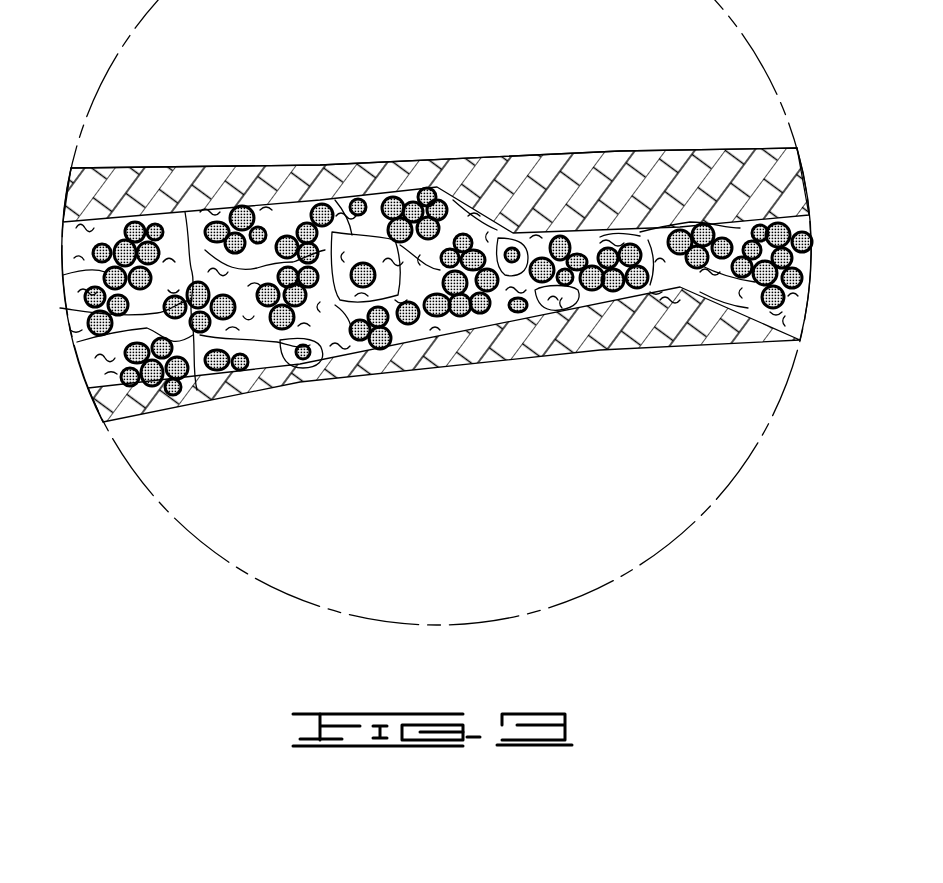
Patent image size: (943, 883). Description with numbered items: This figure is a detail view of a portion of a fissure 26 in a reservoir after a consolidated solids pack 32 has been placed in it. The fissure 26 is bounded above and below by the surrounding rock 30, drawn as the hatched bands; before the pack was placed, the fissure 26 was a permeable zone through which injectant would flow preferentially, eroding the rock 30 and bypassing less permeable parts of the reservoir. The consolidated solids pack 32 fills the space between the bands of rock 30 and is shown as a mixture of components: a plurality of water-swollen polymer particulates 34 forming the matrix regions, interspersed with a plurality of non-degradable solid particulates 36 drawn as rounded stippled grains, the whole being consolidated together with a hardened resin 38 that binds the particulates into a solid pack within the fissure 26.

The fissure 26 is at (688, 148).
The rock 30 is at (564, 153).
The consolidated solids pack 32 is at (285, 166).
The water-swollen polymer particulates 34 is at (371, 201).
The non-degradable solid particulates 36 is at (382, 198).
The hardened resin 38 is at (416, 193).